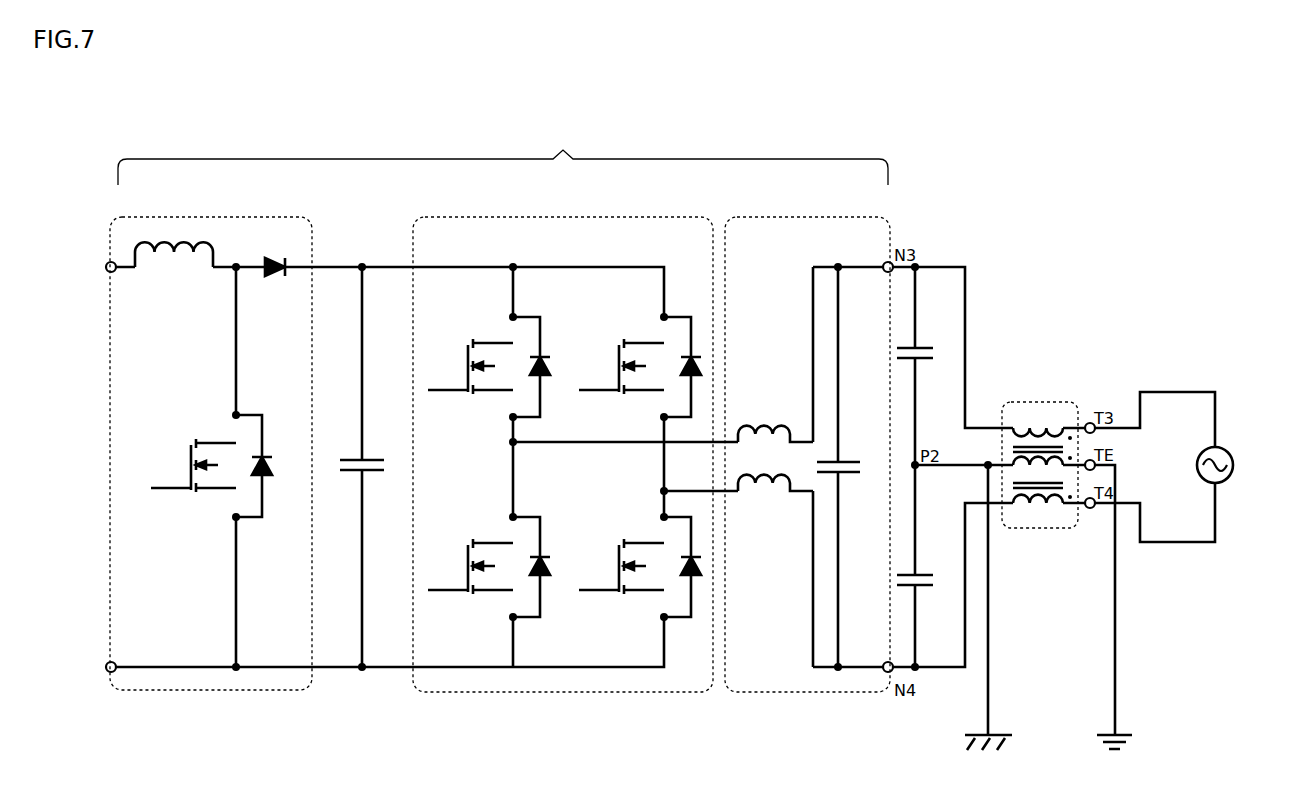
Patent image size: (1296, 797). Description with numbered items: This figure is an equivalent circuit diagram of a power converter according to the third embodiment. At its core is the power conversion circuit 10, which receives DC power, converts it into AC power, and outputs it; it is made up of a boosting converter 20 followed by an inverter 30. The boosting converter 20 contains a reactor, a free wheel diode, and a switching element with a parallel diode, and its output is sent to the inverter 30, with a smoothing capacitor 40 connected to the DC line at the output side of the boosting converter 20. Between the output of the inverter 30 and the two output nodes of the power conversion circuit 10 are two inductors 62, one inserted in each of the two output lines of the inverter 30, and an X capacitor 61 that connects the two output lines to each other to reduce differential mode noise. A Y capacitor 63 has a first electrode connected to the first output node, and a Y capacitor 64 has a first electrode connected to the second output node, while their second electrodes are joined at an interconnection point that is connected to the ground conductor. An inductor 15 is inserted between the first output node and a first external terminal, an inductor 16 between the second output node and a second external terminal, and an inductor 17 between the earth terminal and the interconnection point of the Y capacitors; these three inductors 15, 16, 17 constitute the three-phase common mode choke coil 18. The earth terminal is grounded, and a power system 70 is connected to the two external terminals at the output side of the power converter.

The power conversion circuit 10 is at (503, 153).
The boosting converter 20 is at (266, 217).
The inverter 30 is at (590, 217).
The smoothing capacitor 40 is at (368, 461).
The X capacitor 61 is at (844, 463).
The inductors 62 is at (754, 426).
The Y capacitor 63 is at (920, 349).
The Y capacitor 64 is at (920, 576).
The inductor 15 is at (1041, 427).
The inductor 16 is at (1038, 504).
The inductor 17 is at (1050, 470).
The common mode choke coil 18 is at (1057, 468).
The power system 70 is at (1229, 452).